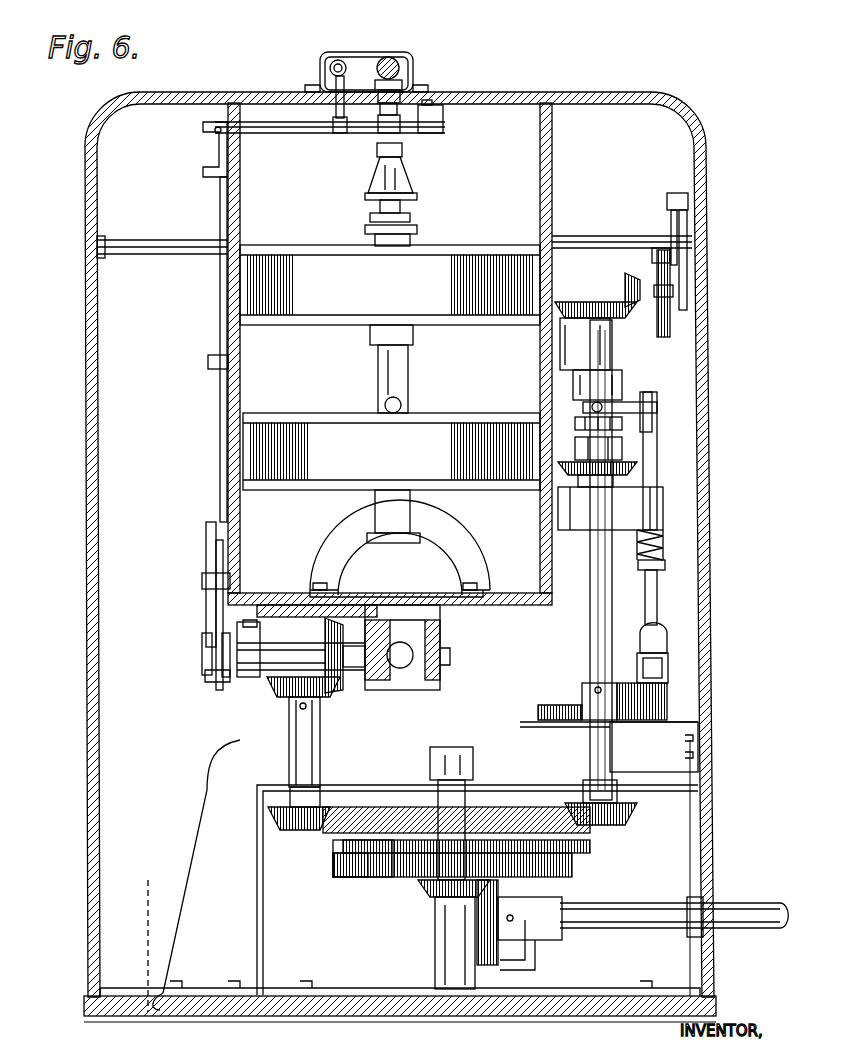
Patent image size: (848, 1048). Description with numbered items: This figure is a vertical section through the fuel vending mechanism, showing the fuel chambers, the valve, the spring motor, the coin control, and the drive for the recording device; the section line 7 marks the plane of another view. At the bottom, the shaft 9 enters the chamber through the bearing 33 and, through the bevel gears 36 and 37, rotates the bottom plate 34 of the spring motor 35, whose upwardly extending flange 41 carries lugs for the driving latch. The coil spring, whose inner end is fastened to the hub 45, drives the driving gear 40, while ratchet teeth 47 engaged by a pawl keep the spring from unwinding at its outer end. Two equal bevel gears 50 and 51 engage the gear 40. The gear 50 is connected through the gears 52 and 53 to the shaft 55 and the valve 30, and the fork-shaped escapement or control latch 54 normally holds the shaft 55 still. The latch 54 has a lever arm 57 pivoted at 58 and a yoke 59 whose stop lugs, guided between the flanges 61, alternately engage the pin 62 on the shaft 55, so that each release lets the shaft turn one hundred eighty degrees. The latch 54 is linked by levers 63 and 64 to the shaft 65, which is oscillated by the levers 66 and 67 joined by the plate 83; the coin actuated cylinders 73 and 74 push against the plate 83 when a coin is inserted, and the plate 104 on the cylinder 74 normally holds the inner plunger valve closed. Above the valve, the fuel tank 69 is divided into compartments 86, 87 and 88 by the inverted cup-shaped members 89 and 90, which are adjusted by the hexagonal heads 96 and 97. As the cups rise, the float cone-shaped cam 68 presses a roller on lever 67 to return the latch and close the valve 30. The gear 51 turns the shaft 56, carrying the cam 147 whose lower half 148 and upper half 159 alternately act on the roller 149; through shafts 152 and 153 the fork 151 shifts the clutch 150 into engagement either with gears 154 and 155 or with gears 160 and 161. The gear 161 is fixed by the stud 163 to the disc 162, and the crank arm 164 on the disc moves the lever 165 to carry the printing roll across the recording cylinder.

The section line 7 is at (190, 215).
The plate 83 is at (352, 60).
The coin actuated cylinder 73 is at (334, 62).
The coin actuated cylinder 74 is at (392, 60).
The plate 104 is at (400, 85).
The lever 66 is at (336, 82).
The shaft 65 is at (290, 134).
The lever 64 is at (205, 152).
The lever 67 is at (378, 130).
The float cone-shaped cam 68 is at (408, 178).
The hexagonal head 96 is at (410, 216).
The hexagonal head 97 is at (366, 228).
The compartment 88 is at (390, 360).
The inverted cup-shaped member 90 is at (390, 285).
The gasoline fuel tank 69 is at (222, 340).
The compartment 87 is at (422, 369).
The lever 63 is at (220, 420).
The inverted cup-shaped member 89 is at (391, 451).
The compartment 86 is at (478, 510).
The lever arm 57 is at (206, 543).
The pivot 58 is at (202, 580).
The fork-shaped escapement or control latch 54 is at (216, 604).
The yoke 59 is at (222, 645).
The pin 62 is at (202, 655).
The flanges 61 is at (212, 683).
The gear 53 is at (330, 620).
The shaft 55 is at (300, 648).
The gear 52 is at (268, 697).
The valve 30 is at (390, 688).
The crank arm 164 is at (667, 218).
The gear 160 is at (568, 302).
The gear 161 is at (625, 287).
The lever 165 is at (672, 267).
The stud 163 is at (673, 291).
The disc 162 is at (670, 322).
The clutch 150 is at (615, 390).
The fork 151 is at (628, 402).
The gear 154 is at (622, 448).
The shaft 152 is at (657, 455).
The gear 155 is at (640, 482).
The shaft 56 is at (590, 624).
The shaft 153 is at (667, 635).
The roller 149 is at (668, 665).
The cam 147 is at (582, 690).
The lower half 148 is at (538, 710).
The upper half 159 is at (667, 700).
The hub 45 is at (412, 808).
The driving gear 40 is at (480, 808).
The bevel gear 51 is at (637, 812).
The bevel gear 50 is at (268, 815).
The ratchet teeth 47 is at (343, 846).
The upwardly extending flange 41 is at (572, 862).
The spring motor 35 is at (326, 888).
The bottom plate 34 is at (352, 878).
The bevel gear 37 is at (420, 892).
The bevel gear 36 is at (500, 897).
The bearing 33 is at (690, 897).
The shaft 9 is at (760, 906).